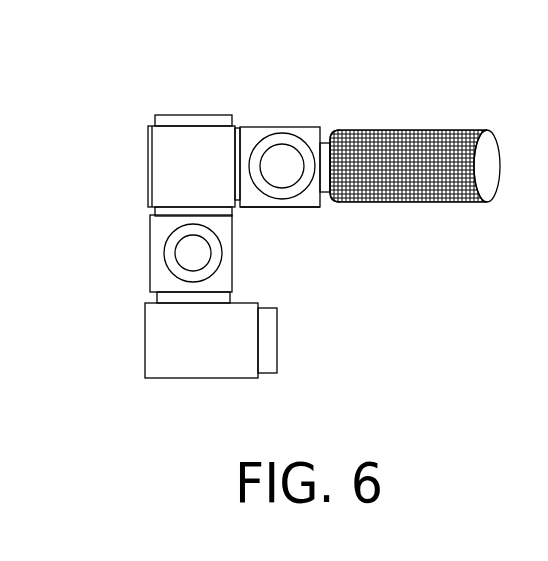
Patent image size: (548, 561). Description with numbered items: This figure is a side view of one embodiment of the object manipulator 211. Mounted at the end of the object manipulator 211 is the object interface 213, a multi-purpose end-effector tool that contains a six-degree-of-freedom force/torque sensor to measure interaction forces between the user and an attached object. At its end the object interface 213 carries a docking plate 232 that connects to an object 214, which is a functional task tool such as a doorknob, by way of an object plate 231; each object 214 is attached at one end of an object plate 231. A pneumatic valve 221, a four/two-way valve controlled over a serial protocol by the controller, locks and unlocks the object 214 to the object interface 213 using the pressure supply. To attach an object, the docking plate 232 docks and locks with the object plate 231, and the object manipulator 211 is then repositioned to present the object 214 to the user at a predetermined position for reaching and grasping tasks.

The object manipulator 211 is at (130, 117).
The pneumatic valve 221 is at (307, 120).
The object interface 213 is at (291, 223).
The docking plate 232 is at (327, 137).
The object plate 231 is at (342, 127).
The object 214 is at (470, 120).